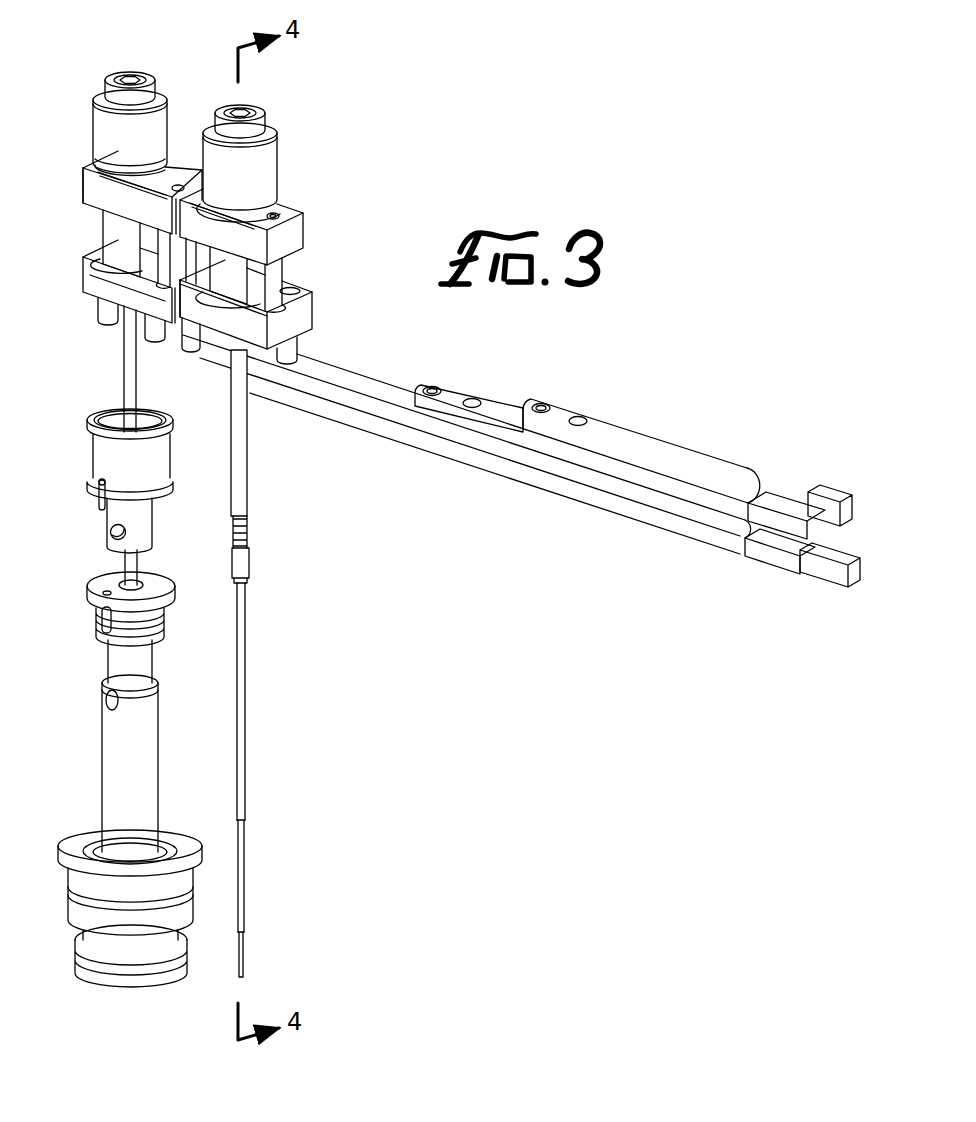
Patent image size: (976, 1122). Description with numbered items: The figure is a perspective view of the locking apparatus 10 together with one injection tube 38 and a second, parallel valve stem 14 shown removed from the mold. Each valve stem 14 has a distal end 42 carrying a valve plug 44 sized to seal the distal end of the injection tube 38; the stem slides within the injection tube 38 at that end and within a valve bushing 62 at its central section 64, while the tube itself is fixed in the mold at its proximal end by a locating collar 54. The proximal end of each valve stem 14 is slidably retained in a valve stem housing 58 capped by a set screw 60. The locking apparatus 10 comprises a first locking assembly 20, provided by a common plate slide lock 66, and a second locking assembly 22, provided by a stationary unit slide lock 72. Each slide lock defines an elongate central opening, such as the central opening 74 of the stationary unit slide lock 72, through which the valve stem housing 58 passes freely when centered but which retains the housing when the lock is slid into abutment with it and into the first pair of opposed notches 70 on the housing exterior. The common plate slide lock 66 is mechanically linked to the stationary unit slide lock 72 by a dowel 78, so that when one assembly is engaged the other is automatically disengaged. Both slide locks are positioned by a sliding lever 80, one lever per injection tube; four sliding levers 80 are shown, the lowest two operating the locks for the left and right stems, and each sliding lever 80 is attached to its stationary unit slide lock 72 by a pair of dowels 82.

The locking apparatus 10 is at (98, 239).
The valve stem 14 is at (139, 393).
The first locking assembly 20 is at (83, 163).
The second locking assembly 22 is at (125, 294).
The injection tube 38 is at (162, 762).
The distal end 42 is at (245, 871).
The valve plug 44 is at (245, 979).
The locating collar 54 is at (165, 624).
The valve stem housing 58 is at (96, 221).
The set screw 60 is at (143, 74).
The valve bushing 62 is at (106, 461).
The central section 64 is at (249, 457).
The common plate slide lock 66 is at (84, 192).
The first pair of opposed notches 70 is at (166, 163).
The stationary unit slide lock 72 is at (83, 270).
The central opening 74 is at (112, 287).
The dowel 78 is at (160, 245).
The sliding lever 80 is at (777, 503).
The pair of dowels 82 is at (158, 338).